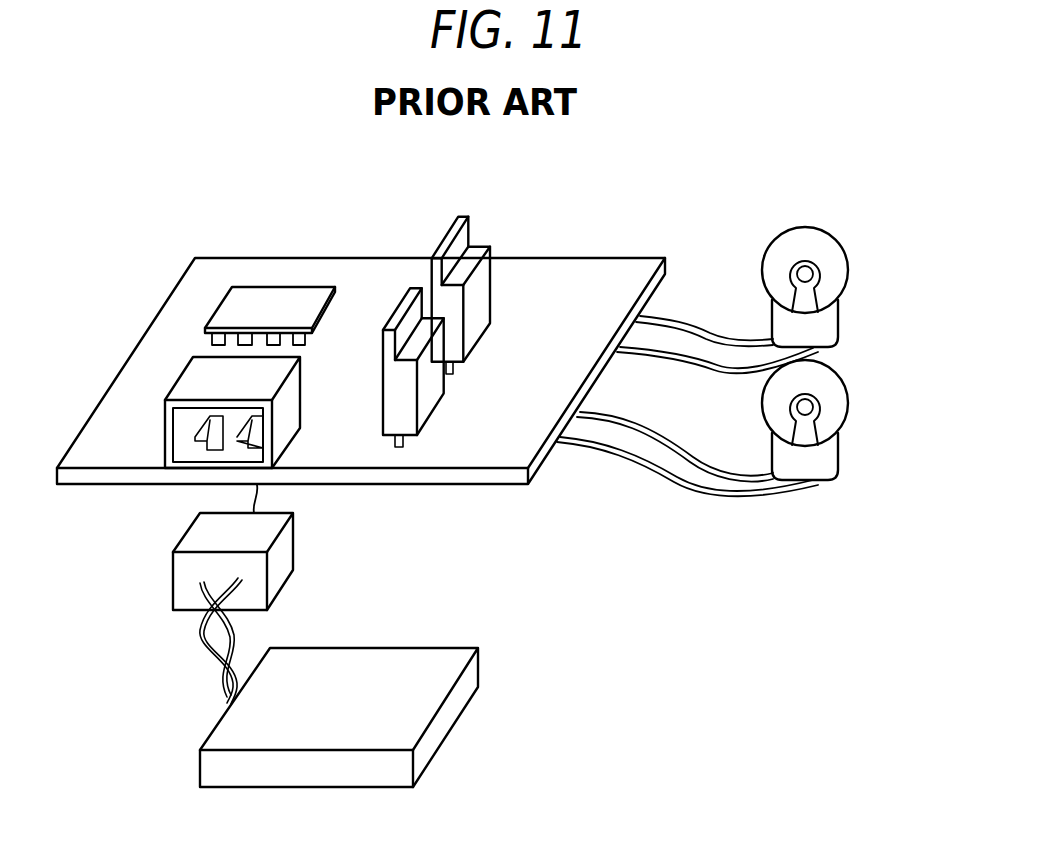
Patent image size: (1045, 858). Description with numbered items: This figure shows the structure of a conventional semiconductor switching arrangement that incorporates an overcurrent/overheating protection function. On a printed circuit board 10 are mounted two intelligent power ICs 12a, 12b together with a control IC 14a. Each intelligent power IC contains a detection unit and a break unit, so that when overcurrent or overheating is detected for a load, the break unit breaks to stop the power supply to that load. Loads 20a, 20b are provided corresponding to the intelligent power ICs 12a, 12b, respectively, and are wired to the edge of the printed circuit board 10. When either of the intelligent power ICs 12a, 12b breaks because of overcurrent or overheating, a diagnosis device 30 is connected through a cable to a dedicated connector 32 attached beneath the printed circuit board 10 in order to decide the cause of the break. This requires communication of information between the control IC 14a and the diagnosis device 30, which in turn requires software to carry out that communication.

The printed circuit board 10 is at (497, 485).
The intelligent power IC 12a is at (492, 293).
The intelligent power IC 12b is at (437, 411).
The integrated circuit 14a is at (273, 297).
The load 20a is at (848, 263).
The load 20b is at (848, 397).
The diagnosis device 30 is at (465, 720).
The dedicated connector 32 is at (290, 585).